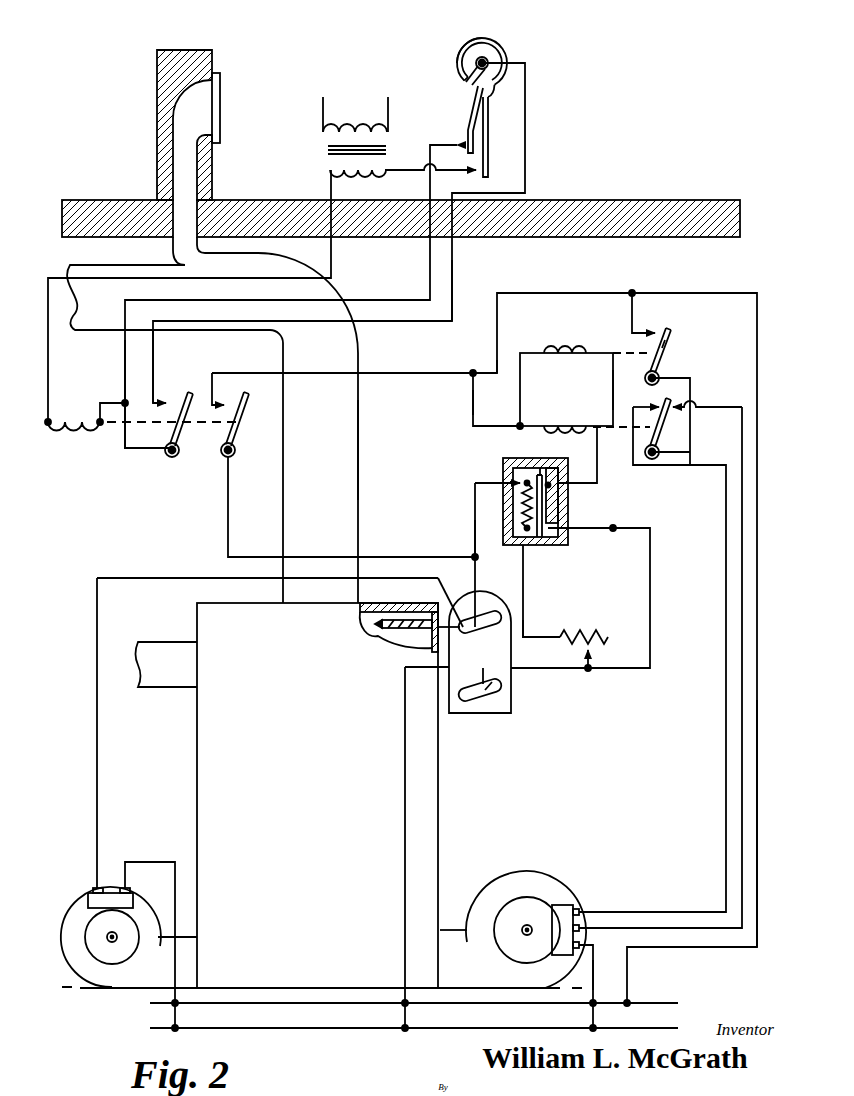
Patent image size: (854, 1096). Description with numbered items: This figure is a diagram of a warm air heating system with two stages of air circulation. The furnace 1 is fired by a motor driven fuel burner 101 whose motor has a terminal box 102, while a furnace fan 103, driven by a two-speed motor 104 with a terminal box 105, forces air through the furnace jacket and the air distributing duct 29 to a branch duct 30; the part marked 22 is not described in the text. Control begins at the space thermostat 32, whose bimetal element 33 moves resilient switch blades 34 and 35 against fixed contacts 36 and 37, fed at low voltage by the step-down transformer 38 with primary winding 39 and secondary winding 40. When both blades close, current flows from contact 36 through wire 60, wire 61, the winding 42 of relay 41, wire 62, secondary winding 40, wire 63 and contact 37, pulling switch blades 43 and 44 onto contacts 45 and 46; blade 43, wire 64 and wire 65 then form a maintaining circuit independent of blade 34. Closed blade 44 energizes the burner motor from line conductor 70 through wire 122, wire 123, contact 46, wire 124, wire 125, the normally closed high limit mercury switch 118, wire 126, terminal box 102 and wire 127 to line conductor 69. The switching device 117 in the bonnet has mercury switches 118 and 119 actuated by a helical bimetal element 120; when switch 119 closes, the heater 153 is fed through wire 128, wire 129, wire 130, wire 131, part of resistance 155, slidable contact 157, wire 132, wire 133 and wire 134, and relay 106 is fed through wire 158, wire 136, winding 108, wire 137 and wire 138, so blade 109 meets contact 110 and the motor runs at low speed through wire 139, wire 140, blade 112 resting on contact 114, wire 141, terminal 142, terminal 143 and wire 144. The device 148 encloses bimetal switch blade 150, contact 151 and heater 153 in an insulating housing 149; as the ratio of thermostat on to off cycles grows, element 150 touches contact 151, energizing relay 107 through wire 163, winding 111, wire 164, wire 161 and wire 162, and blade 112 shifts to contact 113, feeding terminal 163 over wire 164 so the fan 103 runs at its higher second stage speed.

The furnace 1 is at (445, 816).
The air inlet 22 is at (167, 640).
The air distributing duct 29 is at (359, 508).
The branch duct 30 is at (170, 108).
The space thermostat 32 is at (512, 50).
The bimetal element 33 is at (458, 48).
The switch blade 34 is at (470, 125).
The switch blade 35 is at (490, 150).
The fixed electrical contact 36 is at (450, 142).
The fixed electrical contact 37 is at (478, 178).
The transformer 38 is at (320, 133).
The primary winding 39 is at (352, 122).
The secondary winding 40 is at (350, 177).
The relay 41 is at (130, 437).
The relay winding 42 is at (80, 415).
The switch blade 43 is at (180, 446).
The switch blade 44 is at (236, 446).
The fixed electrical contact 45 is at (172, 400).
The fixed electrical contact 46 is at (232, 397).
The wire 60 is at (366, 300).
The wire 61 is at (108, 428).
The wire 62 is at (178, 282).
The wire 63 is at (413, 172).
The wire 64 is at (148, 450).
The wire 65 is at (455, 275).
The line conductor 69 is at (646, 1028).
The line conductor 70 is at (640, 1000).
The motor driven fuel burner 101 is at (62, 940).
The terminal box 102 is at (86, 892).
The furnace fan 103 is at (521, 872).
The two-speed motor 104 is at (534, 898).
The terminal box 105 is at (562, 904).
The relay 106 is at (548, 327).
The relay 107 is at (583, 636).
The coil winding 108 is at (567, 350).
The switch blade 109 is at (673, 347).
The fixed electrical contact 110 is at (656, 333).
The coil winding 111 is at (568, 423).
The switch blade 112 is at (662, 420).
The fixed electrical contact 113 is at (648, 406).
The fixed electrical contact 114 is at (665, 402).
The switching device 117 is at (504, 656).
The mercury switch 118 is at (488, 628).
The mercury switch 119 is at (488, 700).
The helical bimetal thermostatic element 120 is at (373, 645).
The wire 122 is at (758, 875).
The wire 123 is at (568, 293).
The wire 124 is at (249, 556).
The wire 125 is at (477, 572).
The wire 126 is at (95, 712).
The wire 127 is at (173, 860).
The wire 128 is at (474, 539).
The wire 129 is at (489, 488).
The wire 130 is at (525, 571).
The wire 131 is at (540, 643).
The wire 132 is at (583, 657).
The wire 133 is at (542, 670).
The wire 134 is at (317, 795).
The wire 136 is at (497, 378).
The wire 137 is at (614, 390).
The wire 138 is at (651, 595).
The wire 139 is at (636, 313).
The wire 140 is at (698, 397).
The wire 141 is at (743, 605).
The terminal 142 is at (585, 915).
The terminal 143 is at (575, 962).
The wire 144 is at (594, 980).
The device 148 is at (525, 496).
The insulating housing 149 is at (527, 459).
The flexible bimetal switch blade 150 is at (542, 540).
The fixed electrical contact 151 is at (541, 468).
The electrical heating resistance 153 is at (522, 508).
The resistance element 155 is at (613, 640).
The movable contact 157 is at (600, 655).
The wire 158 is at (470, 404).
The wire 161 is at (553, 484).
The wire 162 is at (568, 527).
The wire (also terminal of terminal box) 163 is at (522, 423).
The wire 164 is at (598, 425).